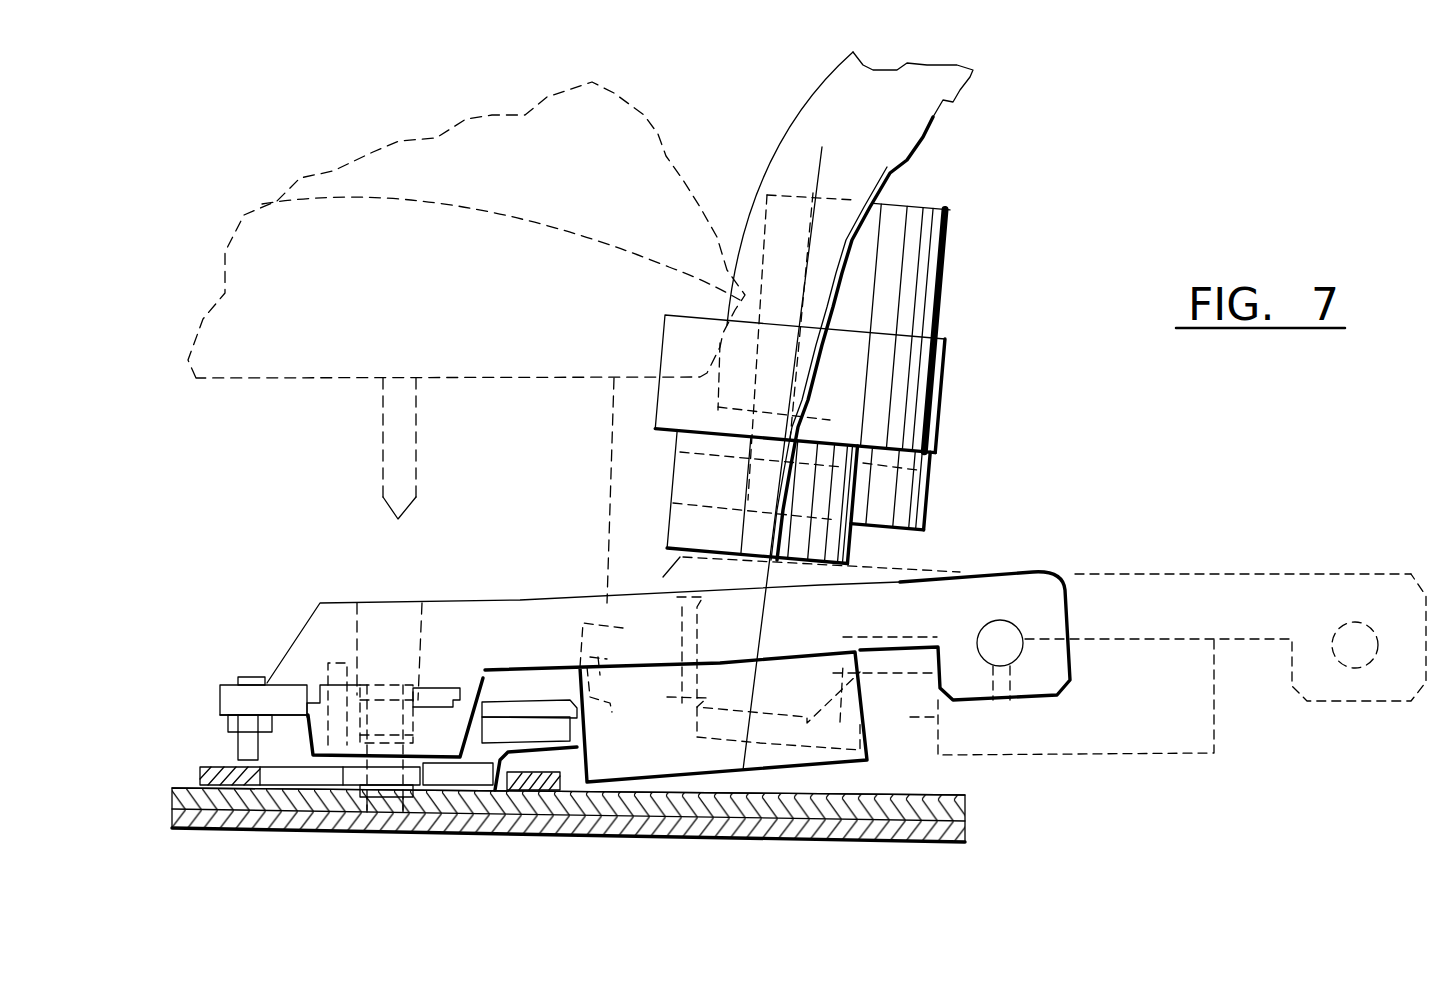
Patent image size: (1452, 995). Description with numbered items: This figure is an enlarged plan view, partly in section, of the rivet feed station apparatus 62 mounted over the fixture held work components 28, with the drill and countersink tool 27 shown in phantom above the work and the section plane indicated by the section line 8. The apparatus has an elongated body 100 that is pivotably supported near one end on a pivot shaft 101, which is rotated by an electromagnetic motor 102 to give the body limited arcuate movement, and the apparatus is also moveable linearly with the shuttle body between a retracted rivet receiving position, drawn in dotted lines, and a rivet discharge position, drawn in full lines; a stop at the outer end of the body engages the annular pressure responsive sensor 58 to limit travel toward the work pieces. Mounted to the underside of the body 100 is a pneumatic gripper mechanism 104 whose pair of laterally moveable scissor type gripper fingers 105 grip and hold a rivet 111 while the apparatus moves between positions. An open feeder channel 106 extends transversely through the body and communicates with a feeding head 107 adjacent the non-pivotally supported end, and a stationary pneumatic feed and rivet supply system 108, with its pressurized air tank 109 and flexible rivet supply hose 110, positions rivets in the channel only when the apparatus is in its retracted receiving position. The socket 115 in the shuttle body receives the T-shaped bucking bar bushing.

The section line 8 is at (745, 149).
The drill and countersink tool 27 is at (414, 448).
The work components 28 is at (802, 840).
The pressure responsive sensor 58 is at (545, 836).
The rivet feed station apparatus 62 is at (965, 567).
The elongated body 100 is at (980, 597).
The pivot shaft 101 is at (1018, 636).
The electromagnetic motor 102 is at (232, 735).
The pneumatic gripper mechanism 104 is at (800, 768).
The gripper fingers 105 is at (700, 720).
The feeder channel 106 is at (427, 621).
The feeding head 107 is at (312, 752).
The pneumatic feed and rivet supply system 108 is at (967, 367).
The pressurized air tank 109 is at (947, 297).
The rivet supply hose 110 is at (895, 179).
The rivet 111 is at (387, 713).
The socket 115 is at (415, 715).